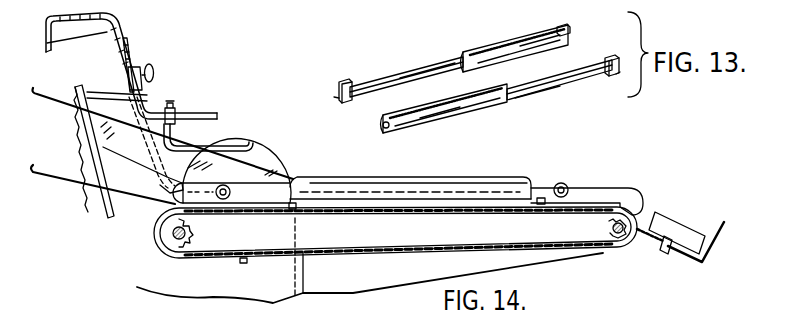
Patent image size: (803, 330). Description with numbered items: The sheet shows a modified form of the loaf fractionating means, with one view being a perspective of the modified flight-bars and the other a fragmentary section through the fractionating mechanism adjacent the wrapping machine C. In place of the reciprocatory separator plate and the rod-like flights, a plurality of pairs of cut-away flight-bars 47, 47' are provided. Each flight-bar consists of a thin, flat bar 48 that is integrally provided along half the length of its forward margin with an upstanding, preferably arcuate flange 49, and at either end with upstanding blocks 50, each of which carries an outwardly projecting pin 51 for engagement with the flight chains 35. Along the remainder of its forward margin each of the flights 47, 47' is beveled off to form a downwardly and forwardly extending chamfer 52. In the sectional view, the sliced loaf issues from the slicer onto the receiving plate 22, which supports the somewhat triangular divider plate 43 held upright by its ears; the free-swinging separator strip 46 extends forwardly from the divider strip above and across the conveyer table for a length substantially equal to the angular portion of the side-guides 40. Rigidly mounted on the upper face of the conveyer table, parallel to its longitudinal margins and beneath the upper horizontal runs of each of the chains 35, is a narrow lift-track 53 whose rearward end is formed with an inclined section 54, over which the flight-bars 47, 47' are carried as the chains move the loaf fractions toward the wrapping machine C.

In FIG. 14, the receiving plate 22 is at (128, 200).
In FIG. 14, the flight chains 35 is at (492, 207).
In FIG. 14, the side-guides 40 is at (403, 172).
In FIG. 14, the divider plate 43 is at (181, 160).
In FIG. 14, the separator strip 46 is at (462, 170).
In FIG. 13, the cut-away flight-bar 47 is at (515, 43).
In FIG. 14, the cut-away flight-bar 47 is at (408, 177).
In FIG. 13, the cut-away flight-bar 47' is at (450, 112).
In FIG. 14, the cut-away flight-bar 47' is at (310, 178).
In FIG. 13, the flat bar 48 is at (456, 66).
In FIG. 13, the arcuate flange 49 is at (535, 42).
In FIG. 13, the upstanding blocks 50 is at (344, 80).
In FIG. 13, the pin 51 is at (338, 100).
In FIG. 13, the chamfer 52 is at (390, 86).
In FIG. 14, the lift-track 53 is at (352, 212).
In FIG. 14, the inclined section 54 is at (315, 251).
In FIG. 14, the wrapping machine C is at (727, 223).